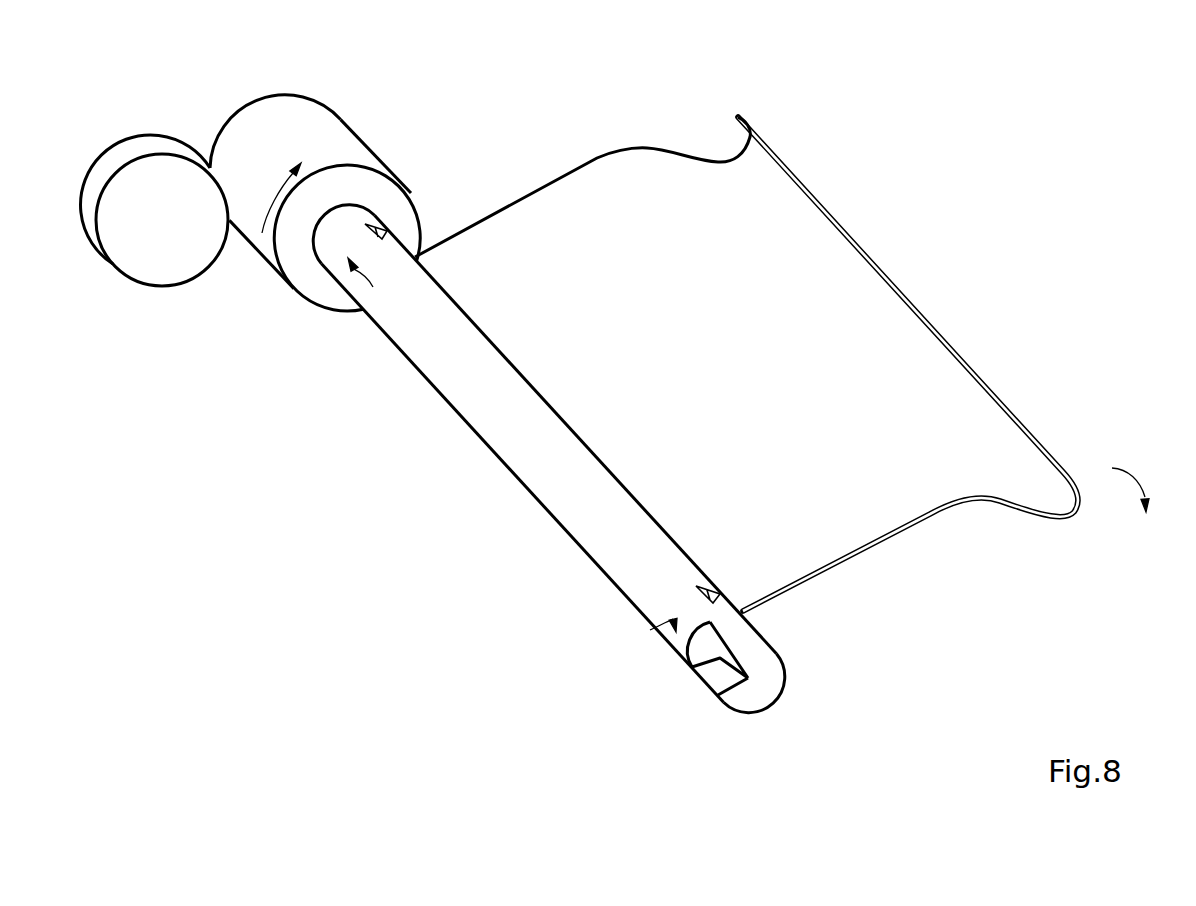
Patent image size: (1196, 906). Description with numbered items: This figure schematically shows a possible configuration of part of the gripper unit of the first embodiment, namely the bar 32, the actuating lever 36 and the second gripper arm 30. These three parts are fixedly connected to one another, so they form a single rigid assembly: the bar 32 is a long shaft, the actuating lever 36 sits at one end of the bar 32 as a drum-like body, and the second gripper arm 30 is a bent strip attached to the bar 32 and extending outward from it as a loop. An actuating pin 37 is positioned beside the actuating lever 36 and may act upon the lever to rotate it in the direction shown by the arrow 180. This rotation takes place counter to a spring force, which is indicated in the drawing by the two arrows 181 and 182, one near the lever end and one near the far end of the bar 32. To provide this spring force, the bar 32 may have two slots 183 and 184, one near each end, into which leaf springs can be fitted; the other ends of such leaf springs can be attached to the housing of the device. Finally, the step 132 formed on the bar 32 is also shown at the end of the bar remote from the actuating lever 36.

The second gripper arm 30 is at (930, 517).
The bar 32 is at (612, 556).
The actuating lever 36 is at (313, 133).
The actuating pin 37 is at (137, 250).
The step 132 is at (728, 657).
The arrow 180 is at (262, 233).
The arrow 181 is at (373, 287).
The arrow 182 is at (650, 630).
The slot 183 is at (388, 229).
The slot 184 is at (722, 592).